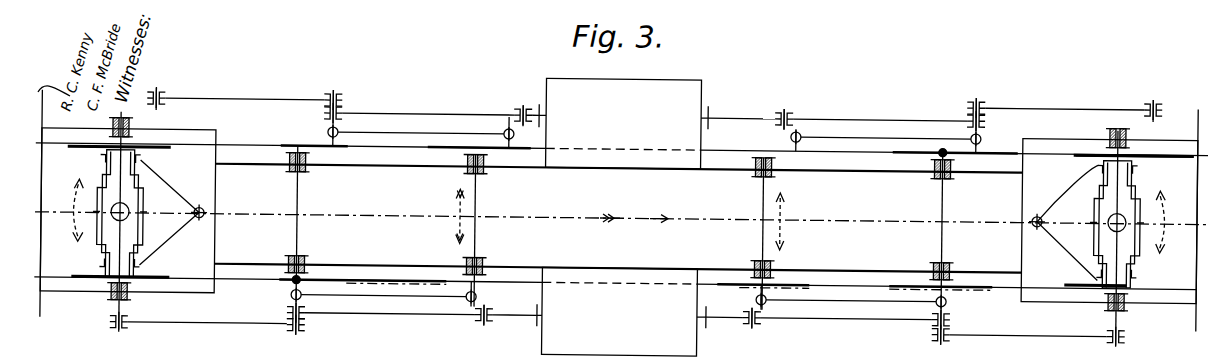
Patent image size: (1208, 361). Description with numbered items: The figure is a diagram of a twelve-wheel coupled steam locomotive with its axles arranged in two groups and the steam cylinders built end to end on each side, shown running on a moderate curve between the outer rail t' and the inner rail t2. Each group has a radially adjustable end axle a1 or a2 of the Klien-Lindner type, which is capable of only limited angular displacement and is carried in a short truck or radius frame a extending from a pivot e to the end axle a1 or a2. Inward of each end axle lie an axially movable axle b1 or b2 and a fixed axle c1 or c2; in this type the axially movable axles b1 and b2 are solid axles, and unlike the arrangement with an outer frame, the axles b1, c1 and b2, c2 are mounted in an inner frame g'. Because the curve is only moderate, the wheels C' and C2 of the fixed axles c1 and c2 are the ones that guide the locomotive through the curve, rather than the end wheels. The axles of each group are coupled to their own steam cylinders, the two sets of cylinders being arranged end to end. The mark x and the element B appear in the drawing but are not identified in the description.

The truck or radius frame a is at (163, 183).
The end axle a1 is at (1160, 197).
The end axle a2 is at (141, 204).
The pivot e is at (203, 213).
The inner frame g' is at (619, 194).
The wheel C' is at (622, 115).
The wheel C2 is at (338, 285).
The bar B is at (453, 286).
The outer rail t' is at (655, 116).
The inner rail t2 is at (860, 285).
The fixed axle c2 is at (299, 207).
The fixed axle c1 is at (945, 236).
The axially movable axle b2 is at (478, 233).
The axially movable axle b1 is at (760, 205).
The bar end x is at (1187, 154).